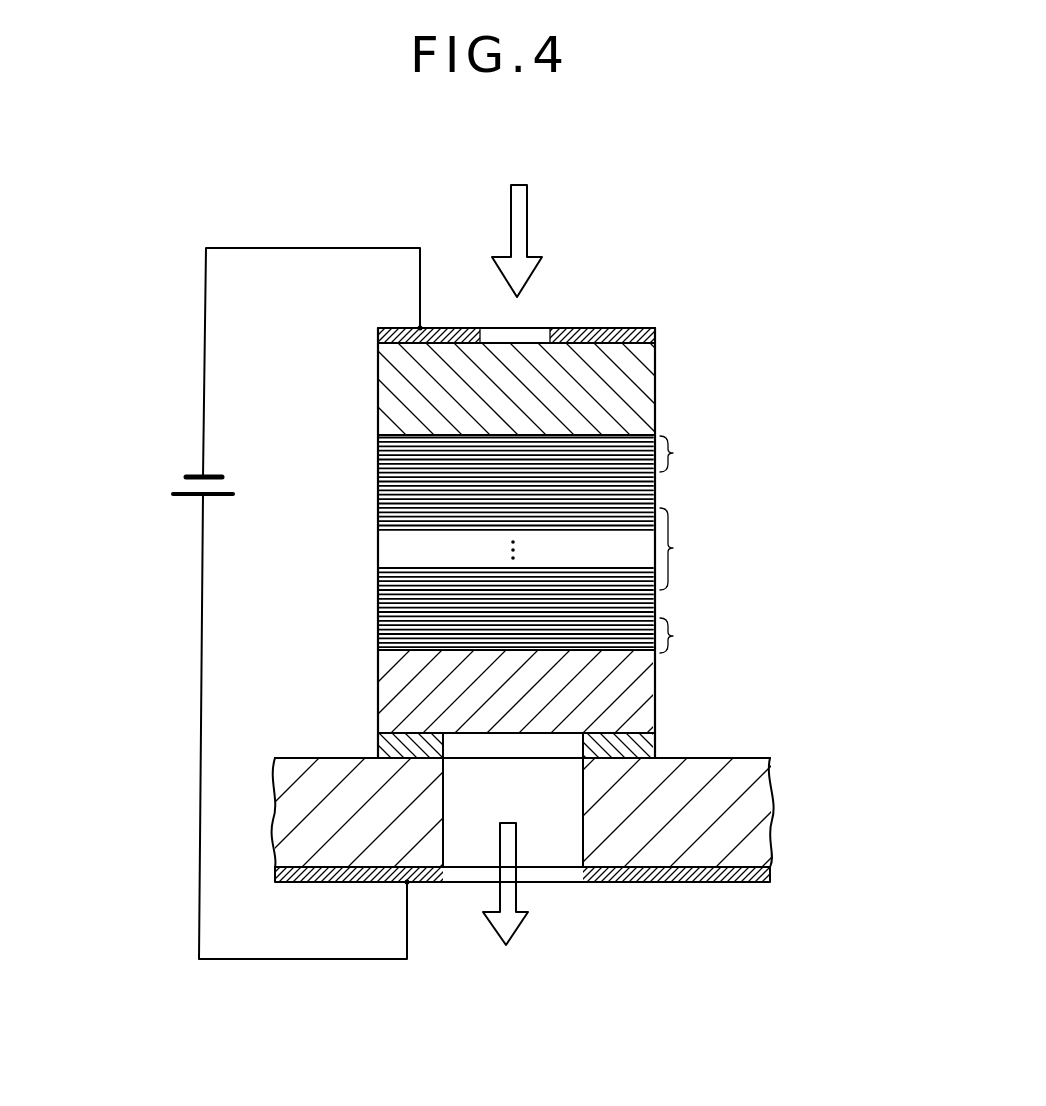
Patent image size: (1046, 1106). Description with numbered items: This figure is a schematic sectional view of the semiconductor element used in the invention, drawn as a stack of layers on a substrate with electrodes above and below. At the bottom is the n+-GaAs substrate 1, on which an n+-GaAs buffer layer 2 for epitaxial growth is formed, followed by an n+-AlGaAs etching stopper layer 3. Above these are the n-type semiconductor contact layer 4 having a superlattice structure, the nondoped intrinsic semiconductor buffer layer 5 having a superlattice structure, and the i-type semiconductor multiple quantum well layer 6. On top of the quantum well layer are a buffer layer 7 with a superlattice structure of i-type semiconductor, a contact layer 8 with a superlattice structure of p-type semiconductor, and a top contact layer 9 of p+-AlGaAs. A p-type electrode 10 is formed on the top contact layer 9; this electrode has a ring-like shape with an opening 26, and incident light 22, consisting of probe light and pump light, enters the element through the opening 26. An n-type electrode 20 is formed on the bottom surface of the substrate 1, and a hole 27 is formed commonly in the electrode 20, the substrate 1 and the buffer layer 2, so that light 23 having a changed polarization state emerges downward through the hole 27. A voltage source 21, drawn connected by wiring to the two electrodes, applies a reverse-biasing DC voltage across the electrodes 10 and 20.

The n+-GaAs substrate 1 is at (730, 805).
The n+-GaAs buffer layer 2 is at (640, 748).
The n+-AlGaAs etching stopper layer 3 is at (642, 689).
The n-type semiconductor contact layer 4 is at (673, 637).
The nondoped intrinsic semiconductor buffer layer 5 is at (657, 602).
The i-type semiconductor multiple quantum well layer 6 is at (677, 545).
The buffer layer 7 is at (657, 490).
The contact layer 8 is at (680, 452).
The top contact layer 9 is at (645, 383).
The p-type electrode 10 is at (657, 342).
The n-type electrode 20 is at (770, 882).
The voltage source 21 is at (185, 482).
The incident light 22 is at (527, 223).
The light having a changed polarization state 23 is at (530, 905).
The opening 26 is at (520, 329).
The hole 27 is at (475, 850).